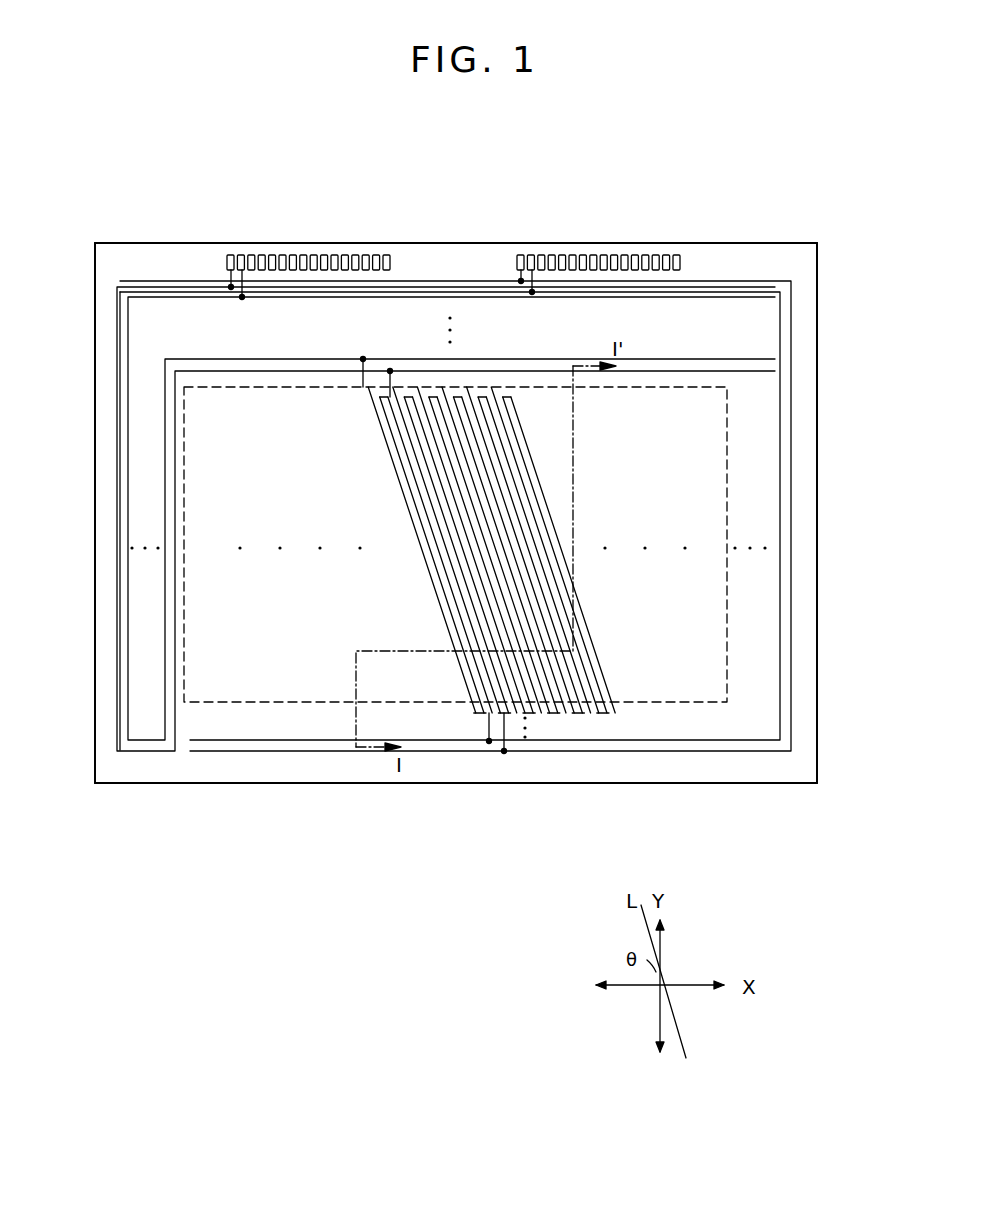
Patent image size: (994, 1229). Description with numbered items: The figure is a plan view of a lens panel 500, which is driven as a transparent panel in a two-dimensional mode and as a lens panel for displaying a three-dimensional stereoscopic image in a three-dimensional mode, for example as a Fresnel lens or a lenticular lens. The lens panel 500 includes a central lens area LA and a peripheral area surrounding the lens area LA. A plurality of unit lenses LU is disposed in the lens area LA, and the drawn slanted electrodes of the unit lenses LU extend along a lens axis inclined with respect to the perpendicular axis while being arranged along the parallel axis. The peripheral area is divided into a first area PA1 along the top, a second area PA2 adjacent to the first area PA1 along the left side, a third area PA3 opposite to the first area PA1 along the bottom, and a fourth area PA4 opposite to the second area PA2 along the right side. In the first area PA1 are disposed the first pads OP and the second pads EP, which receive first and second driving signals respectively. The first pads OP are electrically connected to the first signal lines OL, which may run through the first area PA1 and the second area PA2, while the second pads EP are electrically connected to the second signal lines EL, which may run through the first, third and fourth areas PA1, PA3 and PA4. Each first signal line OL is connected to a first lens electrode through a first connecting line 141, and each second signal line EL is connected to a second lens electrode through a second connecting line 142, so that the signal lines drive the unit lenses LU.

The lens panel 500 is at (436, 243).
The first area PA1 is at (743, 256).
The second area PA2 is at (117, 448).
The third area PA3 is at (357, 772).
The fourth area PA4 is at (750, 408).
The first pads OP is at (393, 242).
The second pads EP is at (683, 242).
The second signal lines EL is at (792, 533).
The first signal lines OL is at (120, 535).
The lens area LA is at (455, 544).
The unit lenses LU is at (610, 692).
The first connecting line 141 is at (362, 386).
The second connecting line 142 is at (507, 728).